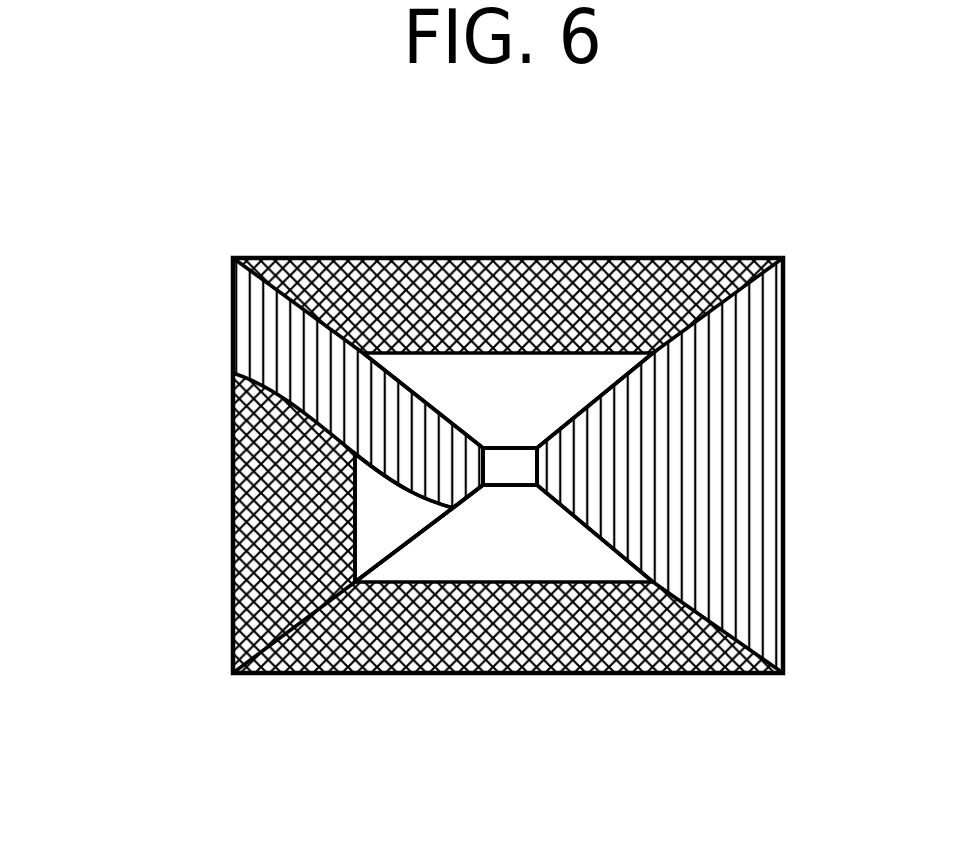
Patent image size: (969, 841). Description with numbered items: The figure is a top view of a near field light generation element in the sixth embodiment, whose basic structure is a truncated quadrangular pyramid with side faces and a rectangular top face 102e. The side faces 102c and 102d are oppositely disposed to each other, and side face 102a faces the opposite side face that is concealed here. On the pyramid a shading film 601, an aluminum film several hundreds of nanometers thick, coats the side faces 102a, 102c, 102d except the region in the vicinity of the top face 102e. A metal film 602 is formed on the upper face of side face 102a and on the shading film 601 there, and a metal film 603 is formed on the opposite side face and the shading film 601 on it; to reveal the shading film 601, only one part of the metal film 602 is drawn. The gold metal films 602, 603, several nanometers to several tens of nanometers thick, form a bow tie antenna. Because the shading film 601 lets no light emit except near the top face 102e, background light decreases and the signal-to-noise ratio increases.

The side face 102a is at (377, 518).
The side face 102c is at (438, 387).
The side face 102d is at (543, 548).
The top face 102e is at (510, 486).
The shading film 601 is at (270, 615).
The metal film 602 is at (283, 333).
The metal film 603 is at (740, 367).